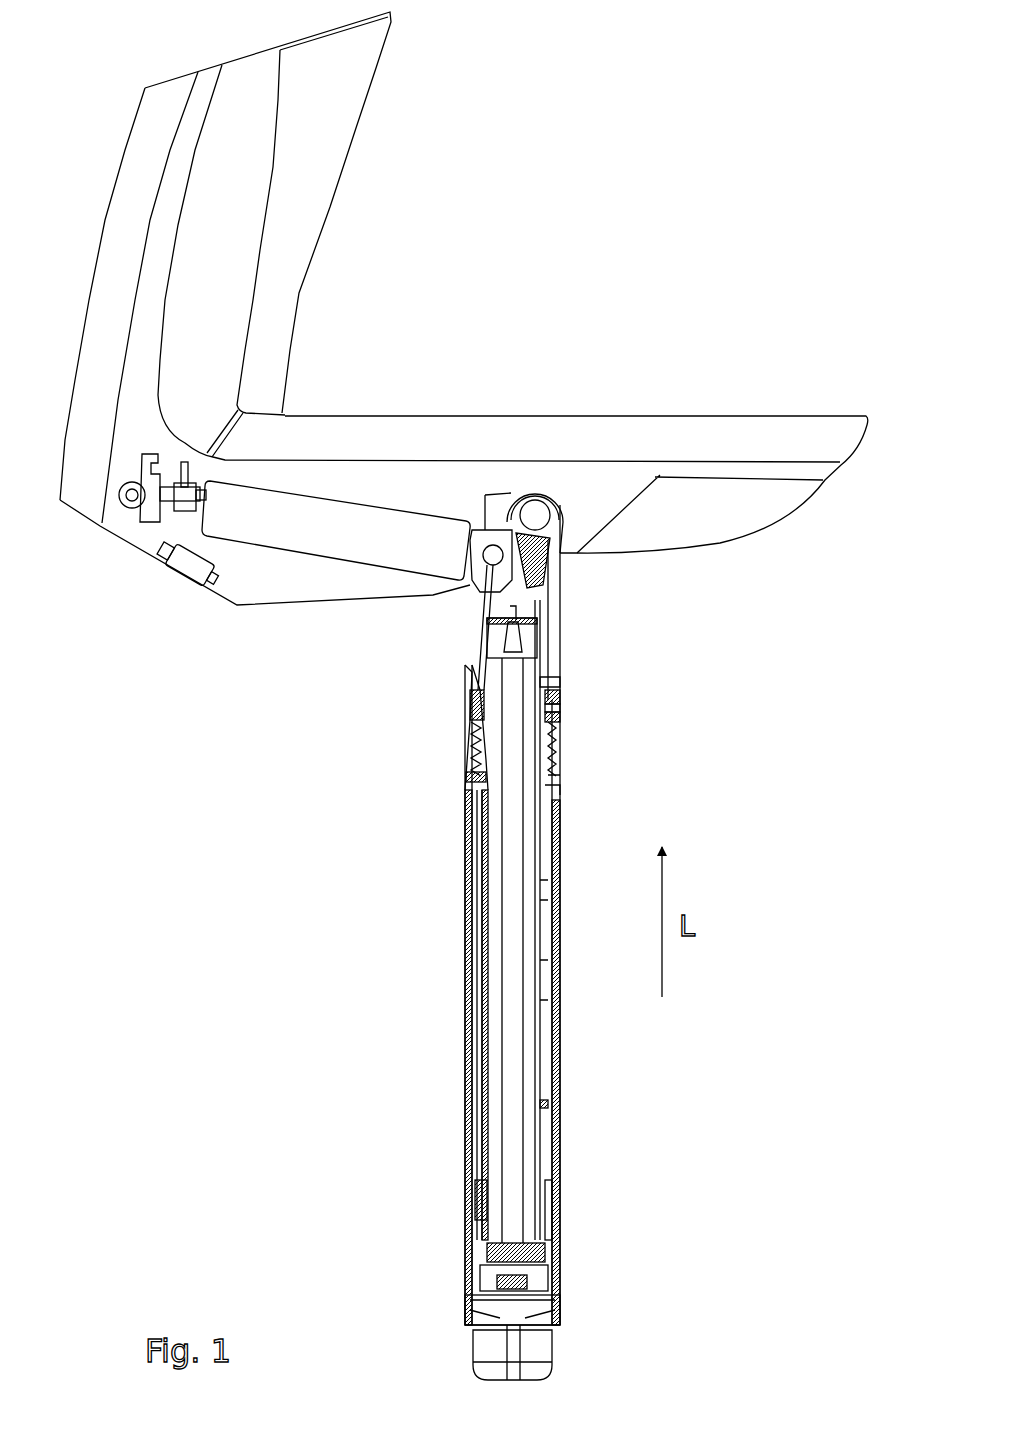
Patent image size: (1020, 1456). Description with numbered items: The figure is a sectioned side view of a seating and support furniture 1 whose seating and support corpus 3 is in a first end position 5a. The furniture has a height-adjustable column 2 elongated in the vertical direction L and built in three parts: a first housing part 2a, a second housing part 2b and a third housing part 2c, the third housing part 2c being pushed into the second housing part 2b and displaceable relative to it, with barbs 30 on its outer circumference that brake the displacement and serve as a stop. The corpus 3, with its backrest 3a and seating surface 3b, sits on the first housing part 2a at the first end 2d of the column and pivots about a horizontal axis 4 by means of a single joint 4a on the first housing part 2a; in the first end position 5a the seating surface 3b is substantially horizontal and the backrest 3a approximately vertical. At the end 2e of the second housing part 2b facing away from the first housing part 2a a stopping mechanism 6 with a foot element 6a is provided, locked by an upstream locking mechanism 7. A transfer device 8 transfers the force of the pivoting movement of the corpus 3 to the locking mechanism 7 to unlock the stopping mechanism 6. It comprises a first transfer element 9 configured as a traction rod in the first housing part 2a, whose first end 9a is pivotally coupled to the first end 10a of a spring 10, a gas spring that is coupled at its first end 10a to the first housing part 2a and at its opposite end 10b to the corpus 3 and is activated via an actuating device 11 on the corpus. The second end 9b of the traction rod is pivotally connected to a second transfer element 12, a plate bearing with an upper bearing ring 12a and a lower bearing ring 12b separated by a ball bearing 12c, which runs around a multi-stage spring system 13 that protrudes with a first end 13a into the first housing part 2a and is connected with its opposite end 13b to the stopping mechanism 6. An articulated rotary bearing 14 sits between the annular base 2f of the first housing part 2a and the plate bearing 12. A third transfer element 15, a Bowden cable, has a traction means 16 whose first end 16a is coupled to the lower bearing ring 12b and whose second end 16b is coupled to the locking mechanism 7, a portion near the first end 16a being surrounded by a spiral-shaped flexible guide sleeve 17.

The seating and support furniture 1 is at (572, 206).
The height-adjustable column 2 is at (437, 1019).
The first housing part 2a is at (548, 562).
The second housing part 2b is at (466, 970).
The third housing part 2c is at (551, 1045).
The first end of the height-adjustable column 2d is at (580, 608).
The end of the second housing part 2e is at (573, 1294).
The annular base of the first housing part 2f is at (553, 735).
The seating and support corpus 3 is at (742, 505).
The backrest 3a is at (330, 160).
The seating surface 3b is at (370, 413).
The horizontal axis 4 is at (552, 518).
The single joint 4a is at (533, 512).
The first end position 5a is at (703, 397).
The stopping mechanism 6 is at (445, 1325).
The foot element 6a is at (548, 1355).
The locking mechanism 7 is at (568, 1241).
The transfer device 8 is at (436, 820).
The first transfer element 9 is at (488, 627).
The first end of the traction rod 9a is at (487, 575).
The second end of the traction rod 9b is at (468, 695).
The spring 10 is at (313, 532).
The first end of the spring 10a is at (476, 548).
The opposite end of the spring 10b is at (138, 507).
The actuating device 11 is at (195, 575).
The second transfer element 12 is at (562, 707).
The upper bearing ring 12a is at (551, 703).
The lower bearing ring 12b is at (552, 713).
The ball bearing 12c is at (549, 703).
The multi-stage spring system 13 is at (515, 973).
The first end of the multi-stage spring system 13a is at (500, 640).
The opposite end of the multi-stage spring system 13b is at (490, 1267).
The articulated rotary bearing 14 is at (552, 725).
The third transfer element 15 is at (476, 921).
The traction means 16 is at (478, 1088).
The first end of the traction means 16a is at (465, 724).
The second end of the traction means 16b is at (480, 1191).
The guide sleeve 17 is at (475, 777).
The barbs 30 is at (554, 1105).